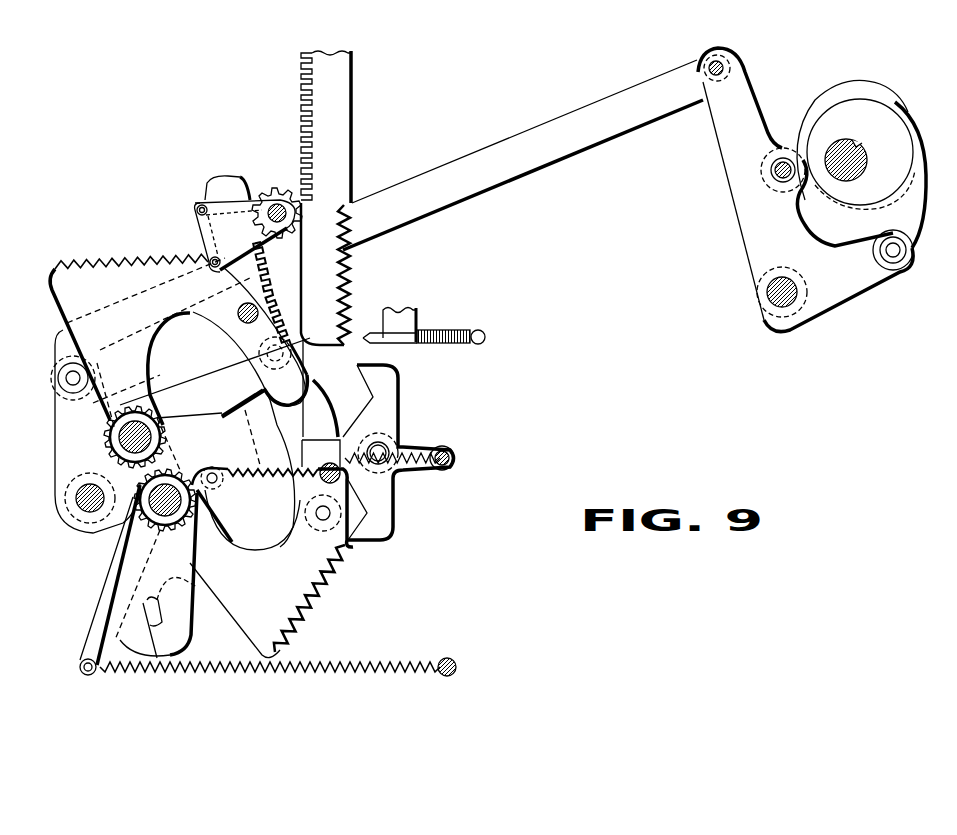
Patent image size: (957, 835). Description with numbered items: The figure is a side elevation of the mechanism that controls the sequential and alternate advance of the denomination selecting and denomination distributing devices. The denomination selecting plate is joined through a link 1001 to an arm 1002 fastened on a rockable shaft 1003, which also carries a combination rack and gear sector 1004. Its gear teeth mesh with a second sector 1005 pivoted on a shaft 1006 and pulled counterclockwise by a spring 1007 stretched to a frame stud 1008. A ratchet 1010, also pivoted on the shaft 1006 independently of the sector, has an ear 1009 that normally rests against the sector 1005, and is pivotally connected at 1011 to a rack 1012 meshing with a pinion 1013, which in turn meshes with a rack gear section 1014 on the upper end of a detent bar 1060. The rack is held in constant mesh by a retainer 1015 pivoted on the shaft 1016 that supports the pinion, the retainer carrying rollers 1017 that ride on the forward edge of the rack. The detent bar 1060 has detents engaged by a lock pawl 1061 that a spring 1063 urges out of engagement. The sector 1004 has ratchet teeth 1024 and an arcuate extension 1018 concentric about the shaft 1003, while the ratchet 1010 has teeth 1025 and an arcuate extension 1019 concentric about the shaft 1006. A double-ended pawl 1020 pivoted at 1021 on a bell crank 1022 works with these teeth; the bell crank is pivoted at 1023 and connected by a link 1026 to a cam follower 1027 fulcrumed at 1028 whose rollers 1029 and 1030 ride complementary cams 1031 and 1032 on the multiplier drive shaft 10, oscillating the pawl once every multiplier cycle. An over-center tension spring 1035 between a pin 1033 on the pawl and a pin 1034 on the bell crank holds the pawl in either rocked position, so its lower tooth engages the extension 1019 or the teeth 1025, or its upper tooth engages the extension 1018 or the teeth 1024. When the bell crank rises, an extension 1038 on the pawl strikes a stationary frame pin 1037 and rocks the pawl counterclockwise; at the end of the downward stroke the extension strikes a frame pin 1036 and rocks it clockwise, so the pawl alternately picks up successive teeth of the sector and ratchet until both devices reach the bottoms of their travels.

The multiplier drive shaft 10 is at (848, 146).
The link 1001 is at (263, 414).
The arm 1002 is at (208, 373).
The rockable shaft 1003 is at (123, 441).
The combination rack and gear sector 1004 is at (62, 307).
The second sector 1005 is at (115, 577).
The shaft 1006 is at (160, 513).
The spring 1007 is at (353, 661).
The frame stud 1008 is at (446, 657).
The ear 1009 is at (183, 651).
The ratchet 1010 is at (318, 588).
The pivotal connection 1011 is at (322, 525).
The rack 1012 is at (227, 176).
The pinion 1013 is at (268, 186).
The rack gear section 1014 is at (297, 108).
The retainer 1015 is at (208, 202).
The shaft 1016 is at (302, 204).
The rollers 1017 is at (210, 254).
The arcuate extension 1018 is at (308, 370).
The arcuate extension 1019 is at (314, 387).
The double-ended pawl 1020 is at (398, 412).
The pivot 1021 is at (388, 448).
The bell crank 1022 is at (55, 430).
The pivot 1023 is at (76, 499).
The ratchet teeth 1024 is at (114, 251).
The teeth 1025 is at (343, 556).
The link 1026 is at (529, 173).
The cam follower 1027 is at (738, 203).
The fulcrum 1028 is at (770, 301).
The roller 1029 is at (906, 251).
The roller 1030 is at (768, 163).
The cam 1031 is at (906, 141).
The cam 1032 is at (884, 107).
The pin 1033 is at (456, 461).
The pin 1034 is at (215, 489).
The over-center tension spring 1035 is at (412, 473).
The frame pin 1036 is at (325, 486).
The stationary frame pin 1037 is at (242, 304).
The extension 1038 is at (320, 410).
The detent bar 1060 is at (344, 143).
The lock pawl 1061 is at (418, 311).
The spring 1063 is at (430, 345).